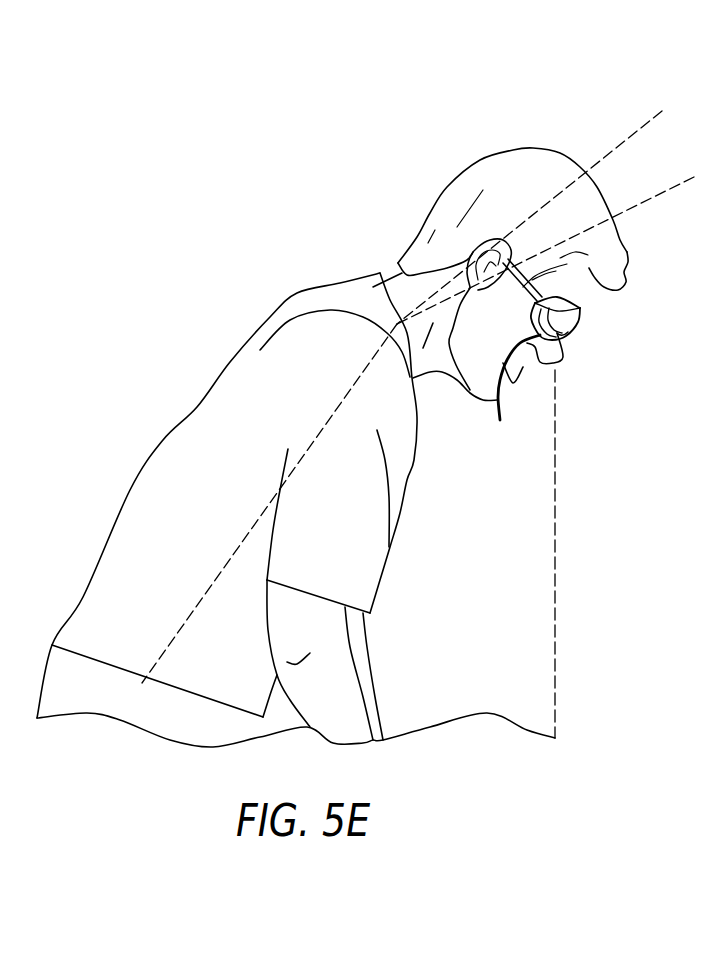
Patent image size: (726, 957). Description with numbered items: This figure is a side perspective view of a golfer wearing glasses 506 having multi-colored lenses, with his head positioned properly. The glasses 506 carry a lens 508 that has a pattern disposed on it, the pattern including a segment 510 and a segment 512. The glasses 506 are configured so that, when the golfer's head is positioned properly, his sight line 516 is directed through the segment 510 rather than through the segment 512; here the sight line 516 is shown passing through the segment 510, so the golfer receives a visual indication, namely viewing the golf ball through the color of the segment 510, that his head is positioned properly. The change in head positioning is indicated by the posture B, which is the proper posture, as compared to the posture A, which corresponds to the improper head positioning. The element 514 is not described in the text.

The glasses 506 is at (594, 385).
The lens 508 is at (556, 298).
The segment 510 is at (510, 392).
The segment 512 is at (566, 332).
The cup 514 is at (574, 314).
The sight line 516 is at (556, 660).
The posture A is at (650, 197).
The posture B is at (633, 134).